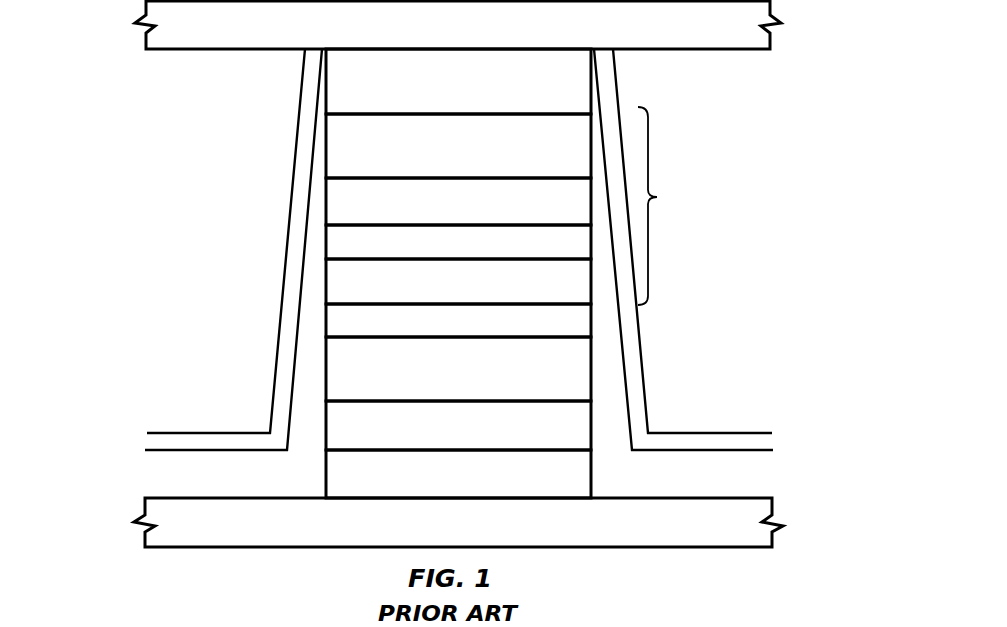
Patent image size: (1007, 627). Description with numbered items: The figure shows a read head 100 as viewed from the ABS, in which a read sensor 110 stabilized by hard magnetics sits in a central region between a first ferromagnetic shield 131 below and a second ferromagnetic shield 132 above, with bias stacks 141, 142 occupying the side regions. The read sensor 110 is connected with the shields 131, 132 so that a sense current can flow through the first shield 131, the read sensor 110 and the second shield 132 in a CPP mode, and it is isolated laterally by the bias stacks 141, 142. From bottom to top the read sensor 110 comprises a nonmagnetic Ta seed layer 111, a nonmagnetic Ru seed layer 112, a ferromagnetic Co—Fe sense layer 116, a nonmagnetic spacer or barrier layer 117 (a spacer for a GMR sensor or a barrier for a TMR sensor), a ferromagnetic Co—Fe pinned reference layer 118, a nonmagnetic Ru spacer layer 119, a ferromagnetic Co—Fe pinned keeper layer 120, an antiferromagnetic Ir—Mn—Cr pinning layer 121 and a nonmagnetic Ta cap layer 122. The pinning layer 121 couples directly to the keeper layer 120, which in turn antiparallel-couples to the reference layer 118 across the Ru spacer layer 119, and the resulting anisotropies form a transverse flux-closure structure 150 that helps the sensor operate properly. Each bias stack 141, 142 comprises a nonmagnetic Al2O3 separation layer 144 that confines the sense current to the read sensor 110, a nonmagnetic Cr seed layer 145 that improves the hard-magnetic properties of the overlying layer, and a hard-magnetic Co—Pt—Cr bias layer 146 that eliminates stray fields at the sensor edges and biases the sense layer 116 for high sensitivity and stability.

The read head 100 is at (203, 568).
The read sensor 110 is at (80, 505).
The Ta seed layer 111 is at (557, 489).
The Ru seed layer 112 is at (557, 441).
The sense layer 116 is at (557, 380).
The spacer or barrier layer 117 is at (557, 333).
The pinned reference layer 118 is at (557, 296).
The Ru spacer layer 119 is at (557, 255).
The pinned keeper layer 120 is at (557, 215).
The pinning layer 121 is at (557, 161).
The Ta cap layer 122 is at (557, 96).
The first ferromagnetic shield 131 is at (592, 535).
The second ferromagnetic shield 132 is at (590, 37).
The bias stack 141 is at (168, 221).
The bias stack 142 is at (813, 351).
The separation layer 144 is at (210, 489).
The Cr seed layer 145 is at (153, 441).
The bias layer 146 is at (215, 401).
The transverse flux-closure structure 150 is at (728, 243).